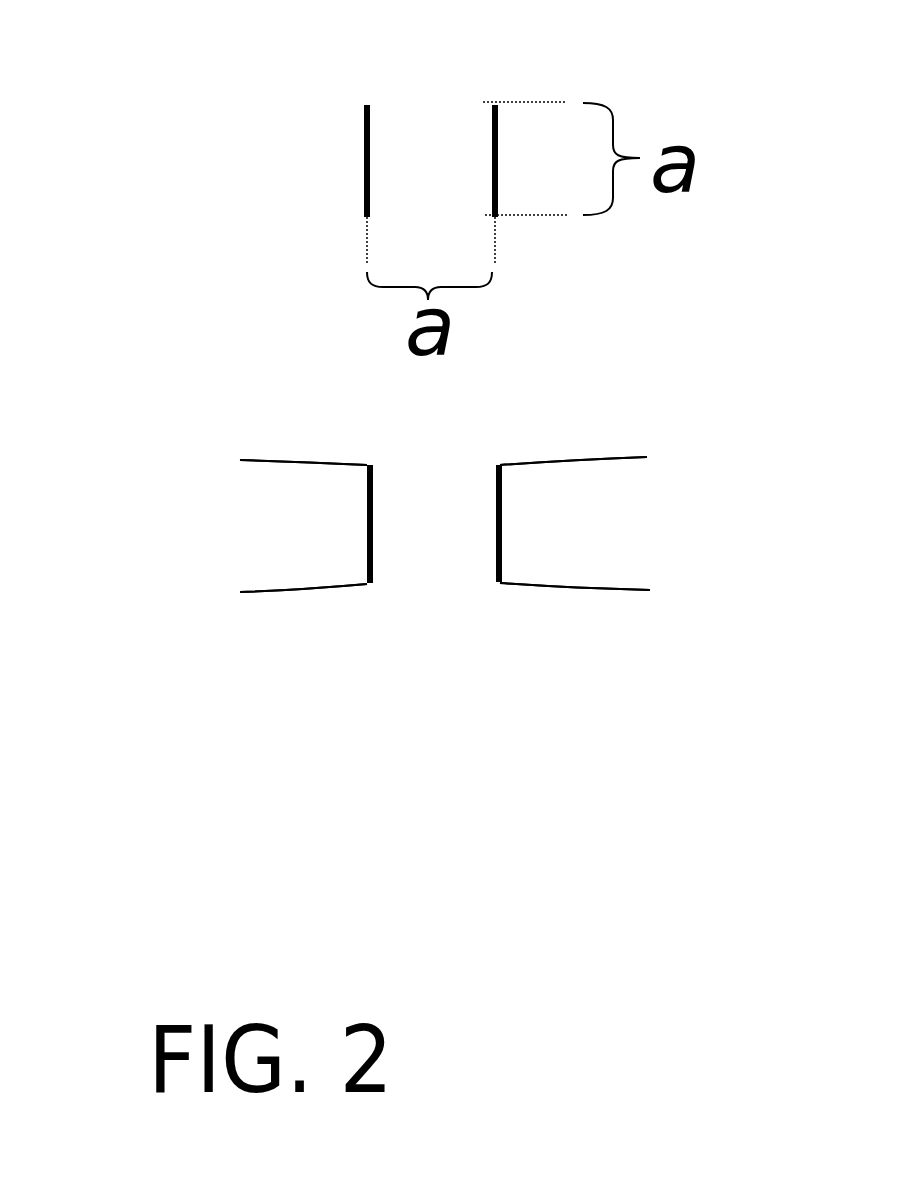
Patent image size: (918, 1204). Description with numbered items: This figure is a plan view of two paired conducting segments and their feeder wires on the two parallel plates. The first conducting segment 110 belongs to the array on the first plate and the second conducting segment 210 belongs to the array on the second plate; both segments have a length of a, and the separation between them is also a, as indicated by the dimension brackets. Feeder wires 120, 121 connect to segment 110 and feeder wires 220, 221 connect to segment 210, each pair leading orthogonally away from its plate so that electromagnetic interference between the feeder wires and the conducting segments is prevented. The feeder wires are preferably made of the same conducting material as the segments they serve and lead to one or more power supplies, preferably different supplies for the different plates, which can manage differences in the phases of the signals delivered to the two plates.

The conducting segment 110 is at (365, 153).
The conducting segment 210 is at (493, 145).
The feeder wire 120 is at (293, 465).
The feeder wire 121 is at (290, 590).
The feeder wire 220 is at (583, 460).
The feeder wire 221 is at (583, 587).